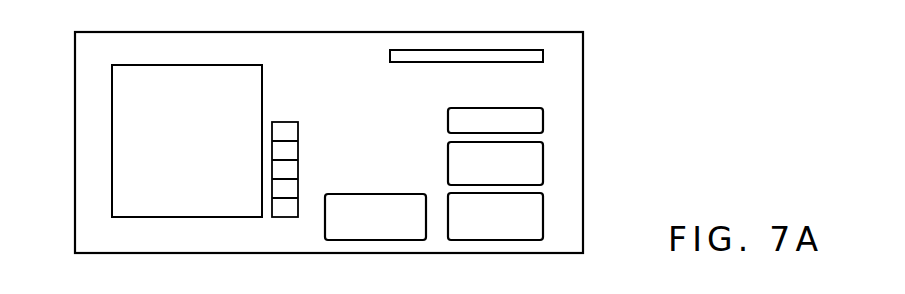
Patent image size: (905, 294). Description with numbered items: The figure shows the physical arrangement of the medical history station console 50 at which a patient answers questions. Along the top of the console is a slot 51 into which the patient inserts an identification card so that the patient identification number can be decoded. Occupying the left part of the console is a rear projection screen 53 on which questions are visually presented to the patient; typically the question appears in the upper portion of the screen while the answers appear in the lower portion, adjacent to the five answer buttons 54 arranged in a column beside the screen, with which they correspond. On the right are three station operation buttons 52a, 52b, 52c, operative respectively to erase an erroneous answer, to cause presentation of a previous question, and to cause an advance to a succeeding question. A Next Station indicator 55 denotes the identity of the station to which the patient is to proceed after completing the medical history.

The station console 50 is at (567, 80).
The slot 51 is at (530, 56).
The station operation button 52a is at (540, 118).
The station operation button 52b is at (538, 162).
The station operation button 52c is at (538, 209).
The rear projection screen 53 is at (121, 162).
The answer buttons 54 is at (297, 123).
The Next Station indicator 55 is at (405, 236).